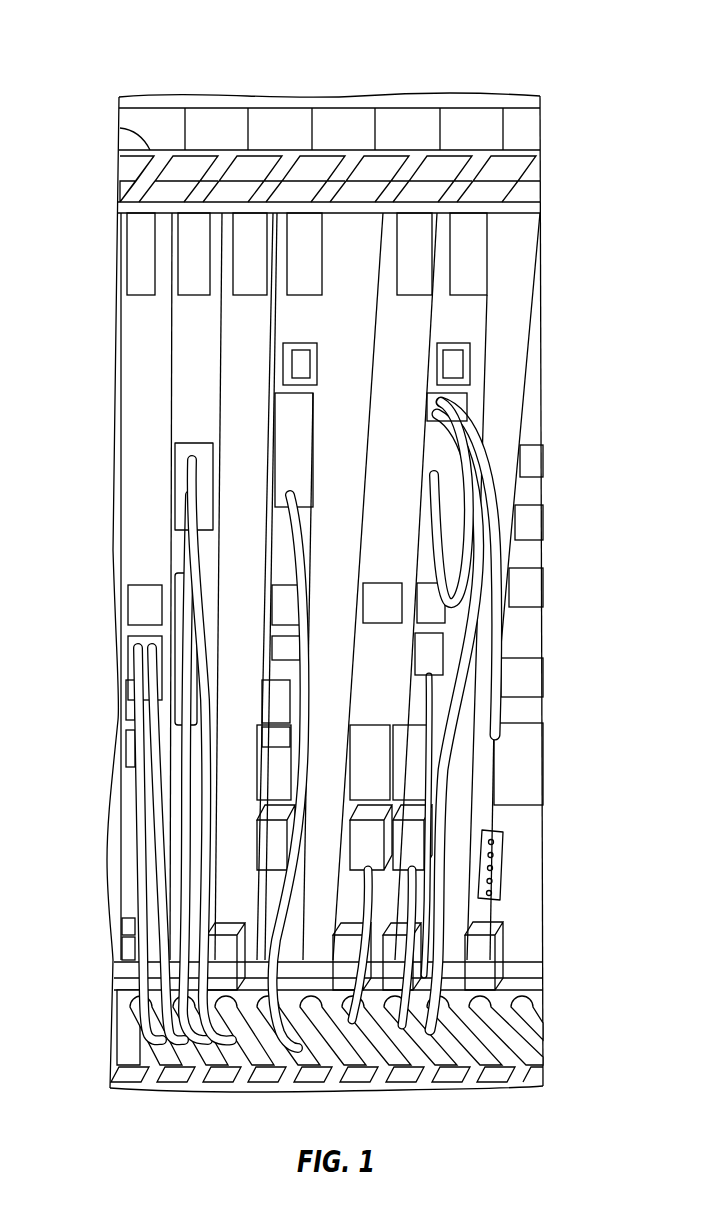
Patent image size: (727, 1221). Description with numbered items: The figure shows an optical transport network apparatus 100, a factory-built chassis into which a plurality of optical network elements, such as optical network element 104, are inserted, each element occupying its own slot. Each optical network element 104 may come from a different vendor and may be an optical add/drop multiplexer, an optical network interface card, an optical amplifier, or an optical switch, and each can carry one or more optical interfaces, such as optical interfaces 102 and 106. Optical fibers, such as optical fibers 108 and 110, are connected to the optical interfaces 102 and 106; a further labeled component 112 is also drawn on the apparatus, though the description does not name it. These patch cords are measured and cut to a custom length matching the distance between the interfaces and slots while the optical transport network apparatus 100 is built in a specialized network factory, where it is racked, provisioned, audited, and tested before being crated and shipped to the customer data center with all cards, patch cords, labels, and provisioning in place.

The optical transport network apparatus 100 is at (82, 109).
The optical interface 102 is at (194, 470).
The optical network element 104 is at (441, 97).
The optical interface 106 is at (466, 400).
The optical fiber 108 is at (463, 422).
The optical fiber 110 is at (476, 641).
The connector port 112 is at (445, 668).